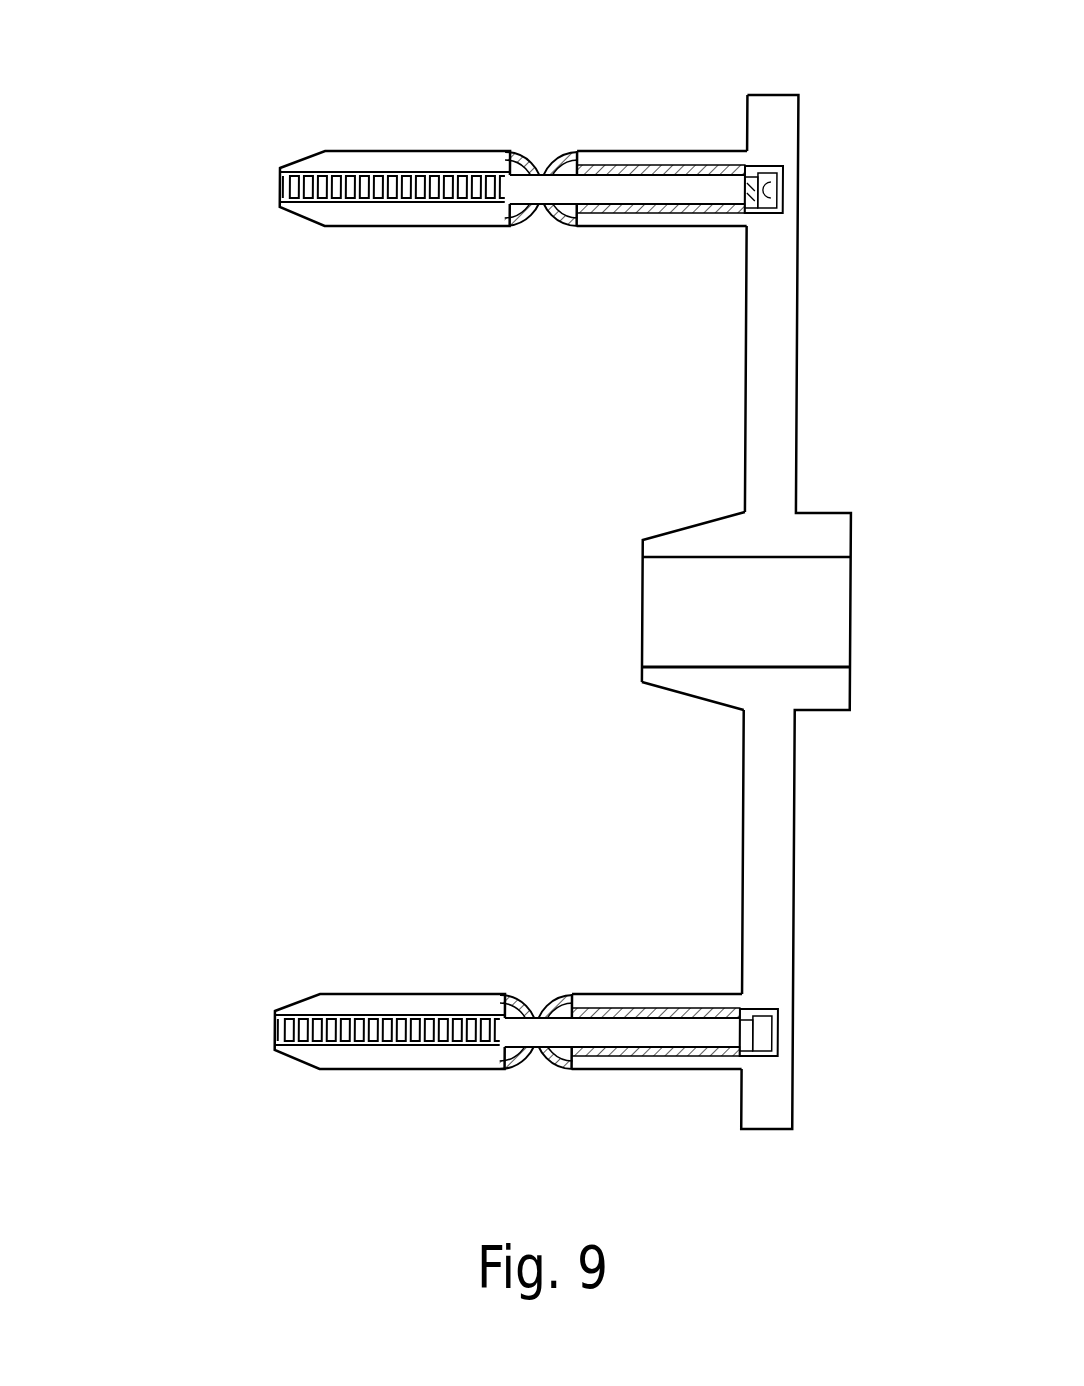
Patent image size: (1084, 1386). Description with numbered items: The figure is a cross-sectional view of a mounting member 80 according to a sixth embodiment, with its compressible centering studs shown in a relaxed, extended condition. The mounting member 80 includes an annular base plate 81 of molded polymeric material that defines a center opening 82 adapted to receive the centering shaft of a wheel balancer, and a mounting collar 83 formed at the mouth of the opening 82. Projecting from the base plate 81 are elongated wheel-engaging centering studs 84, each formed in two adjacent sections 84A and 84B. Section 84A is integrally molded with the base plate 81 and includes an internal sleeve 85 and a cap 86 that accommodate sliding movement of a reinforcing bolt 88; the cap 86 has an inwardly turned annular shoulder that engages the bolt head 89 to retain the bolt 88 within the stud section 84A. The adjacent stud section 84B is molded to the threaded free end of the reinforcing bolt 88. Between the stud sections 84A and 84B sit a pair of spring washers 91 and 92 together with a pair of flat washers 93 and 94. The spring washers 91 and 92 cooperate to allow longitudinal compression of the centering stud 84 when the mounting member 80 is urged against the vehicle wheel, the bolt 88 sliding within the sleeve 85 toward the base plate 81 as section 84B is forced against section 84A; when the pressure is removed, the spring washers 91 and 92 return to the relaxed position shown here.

The mounting member 80 is at (160, 218).
The annular base plate 81 is at (782, 388).
The center opening 82 is at (763, 644).
The mounting collar 83 is at (692, 682).
The centering stud 84 is at (617, 194).
The stud section 84A is at (669, 182).
The stud section 84B is at (350, 226).
The internal sleeve 85 is at (688, 185).
The cap 86 is at (849, 171).
The reinforcing bolt 88 is at (628, 187).
The bolt head 89 is at (757, 213).
The spring washer 91 is at (477, 175).
The spring washer 92 is at (555, 193).
The flat washer 93 is at (515, 223).
The flat washer 94 is at (573, 225).